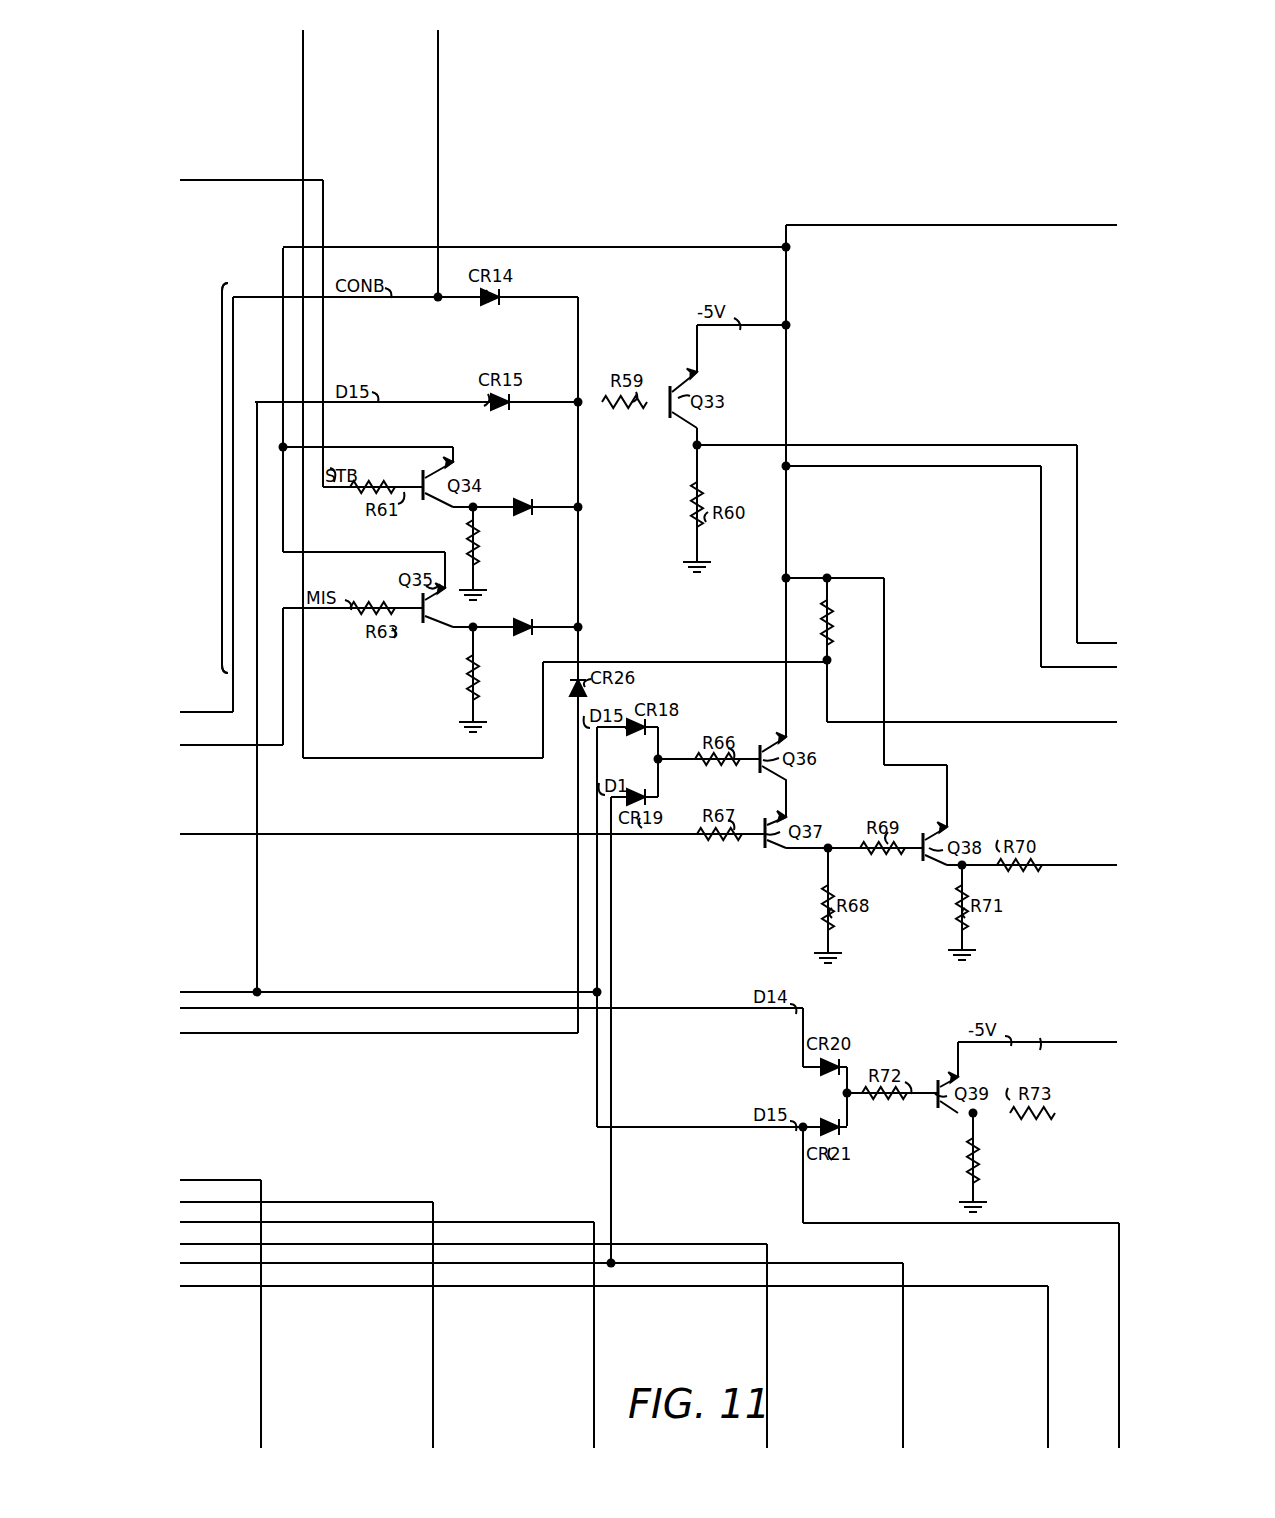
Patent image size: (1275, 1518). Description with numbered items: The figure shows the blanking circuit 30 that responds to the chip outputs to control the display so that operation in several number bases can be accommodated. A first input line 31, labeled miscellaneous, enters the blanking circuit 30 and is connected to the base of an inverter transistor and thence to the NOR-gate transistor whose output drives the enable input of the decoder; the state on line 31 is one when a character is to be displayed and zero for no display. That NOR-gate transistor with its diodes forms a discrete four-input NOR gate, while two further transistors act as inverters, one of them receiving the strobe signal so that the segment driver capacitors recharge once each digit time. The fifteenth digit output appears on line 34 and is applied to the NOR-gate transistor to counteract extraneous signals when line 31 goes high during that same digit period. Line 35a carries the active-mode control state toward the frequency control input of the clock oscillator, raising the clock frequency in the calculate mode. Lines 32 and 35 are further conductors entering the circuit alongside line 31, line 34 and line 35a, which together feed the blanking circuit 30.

The input line 32 is at (230, 180).
The line 35a is at (440, 180).
The blanking circuit 30 is at (222, 478).
The conductor line 35 is at (210, 712).
The first input line 31 is at (225, 745).
The line 34 is at (257, 930).